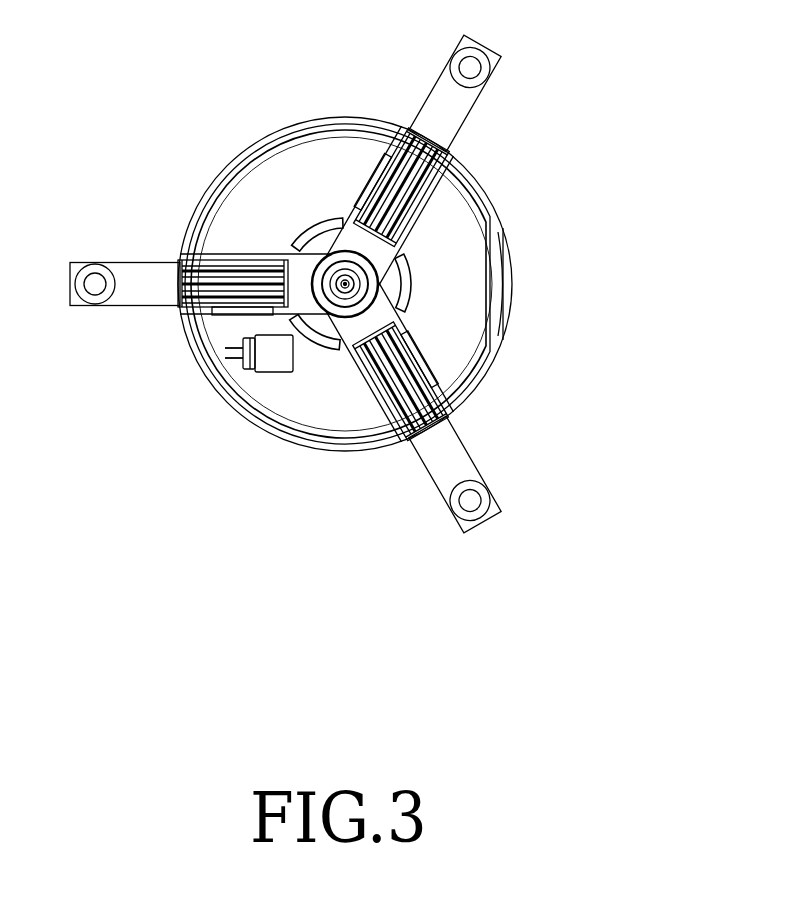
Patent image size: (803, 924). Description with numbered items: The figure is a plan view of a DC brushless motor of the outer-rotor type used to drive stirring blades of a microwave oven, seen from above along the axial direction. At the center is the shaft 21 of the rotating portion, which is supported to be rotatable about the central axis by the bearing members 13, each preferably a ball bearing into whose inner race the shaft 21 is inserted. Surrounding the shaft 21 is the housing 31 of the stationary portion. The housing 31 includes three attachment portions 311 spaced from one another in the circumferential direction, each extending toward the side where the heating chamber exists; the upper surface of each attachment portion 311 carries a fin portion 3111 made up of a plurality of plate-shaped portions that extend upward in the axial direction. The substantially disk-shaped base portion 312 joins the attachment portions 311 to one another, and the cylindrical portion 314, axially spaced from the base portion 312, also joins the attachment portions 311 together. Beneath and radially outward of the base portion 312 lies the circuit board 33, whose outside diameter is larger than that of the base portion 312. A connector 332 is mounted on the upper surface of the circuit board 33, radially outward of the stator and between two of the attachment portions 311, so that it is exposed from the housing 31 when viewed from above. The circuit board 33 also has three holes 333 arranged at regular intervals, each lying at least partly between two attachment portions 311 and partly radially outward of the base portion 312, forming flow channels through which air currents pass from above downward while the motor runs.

The bearing member 13 is at (365, 272).
The shaft 21 is at (355, 281).
The housing 31 is at (334, 240).
The attachment portion 311 is at (150, 288).
The fin portion 3111 is at (238, 278).
The base portion 312 is at (380, 296).
The cylindrical portion 314 is at (240, 158).
The circuit board 33 is at (458, 352).
The connector 332 is at (277, 360).
The hole 333 is at (322, 343).